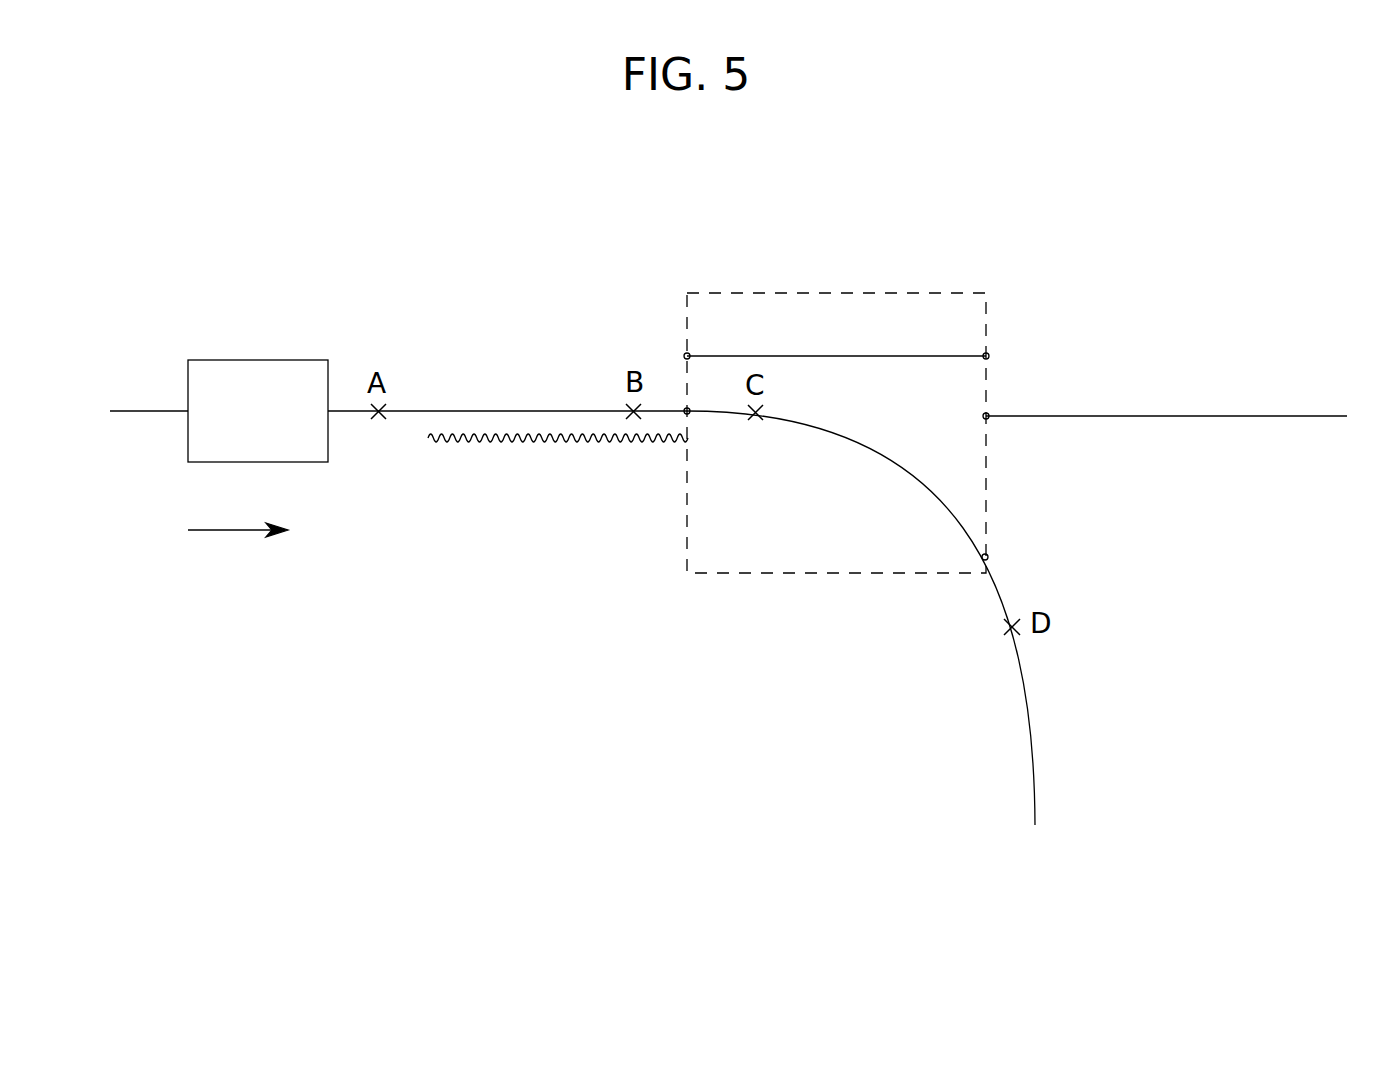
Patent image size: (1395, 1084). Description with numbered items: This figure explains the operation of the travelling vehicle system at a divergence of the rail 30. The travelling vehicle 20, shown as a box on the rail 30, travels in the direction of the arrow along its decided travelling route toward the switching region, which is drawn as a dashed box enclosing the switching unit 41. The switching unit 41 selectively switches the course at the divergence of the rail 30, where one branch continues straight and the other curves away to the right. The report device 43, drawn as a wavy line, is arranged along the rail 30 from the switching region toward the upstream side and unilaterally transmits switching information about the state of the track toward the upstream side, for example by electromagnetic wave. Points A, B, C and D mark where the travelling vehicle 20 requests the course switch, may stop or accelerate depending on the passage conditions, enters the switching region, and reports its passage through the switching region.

The travelling vehicle 20 is at (247, 359).
The rail 30 is at (149, 410).
The switching unit 41 is at (888, 293).
The report device 43 is at (557, 443).